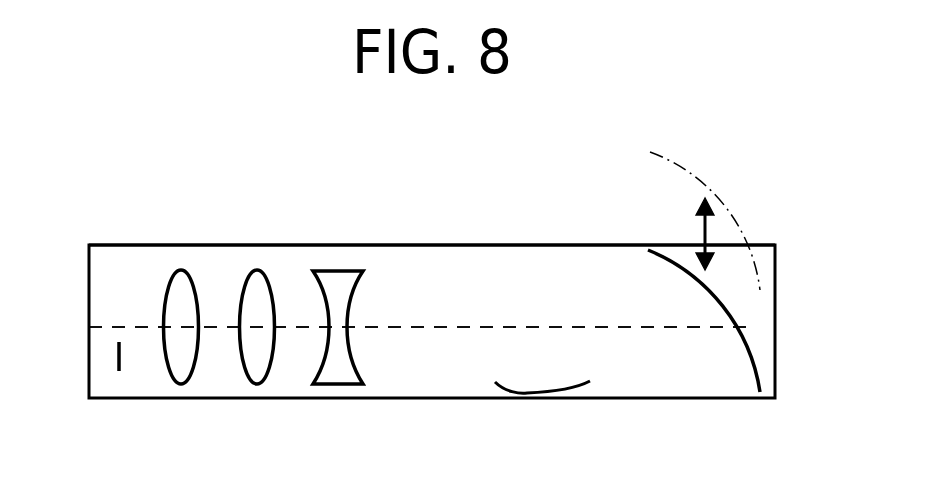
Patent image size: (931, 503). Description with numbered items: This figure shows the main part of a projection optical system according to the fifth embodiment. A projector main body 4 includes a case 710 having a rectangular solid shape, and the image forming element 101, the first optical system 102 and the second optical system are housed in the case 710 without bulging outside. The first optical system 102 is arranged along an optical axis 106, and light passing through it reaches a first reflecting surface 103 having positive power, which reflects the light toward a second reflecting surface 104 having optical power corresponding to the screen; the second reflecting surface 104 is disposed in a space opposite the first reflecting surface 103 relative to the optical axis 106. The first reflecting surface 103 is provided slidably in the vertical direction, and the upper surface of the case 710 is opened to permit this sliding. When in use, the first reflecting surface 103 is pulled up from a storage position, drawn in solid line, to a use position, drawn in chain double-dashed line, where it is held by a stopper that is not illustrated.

The projector main body 4 is at (416, 231).
The case 710 is at (143, 244).
The image forming element 101 is at (116, 357).
The first optical system 102 is at (365, 415).
The first reflecting surface 103 is at (733, 221).
The second reflecting surface 104 is at (535, 395).
The optical axis 106 is at (698, 330).